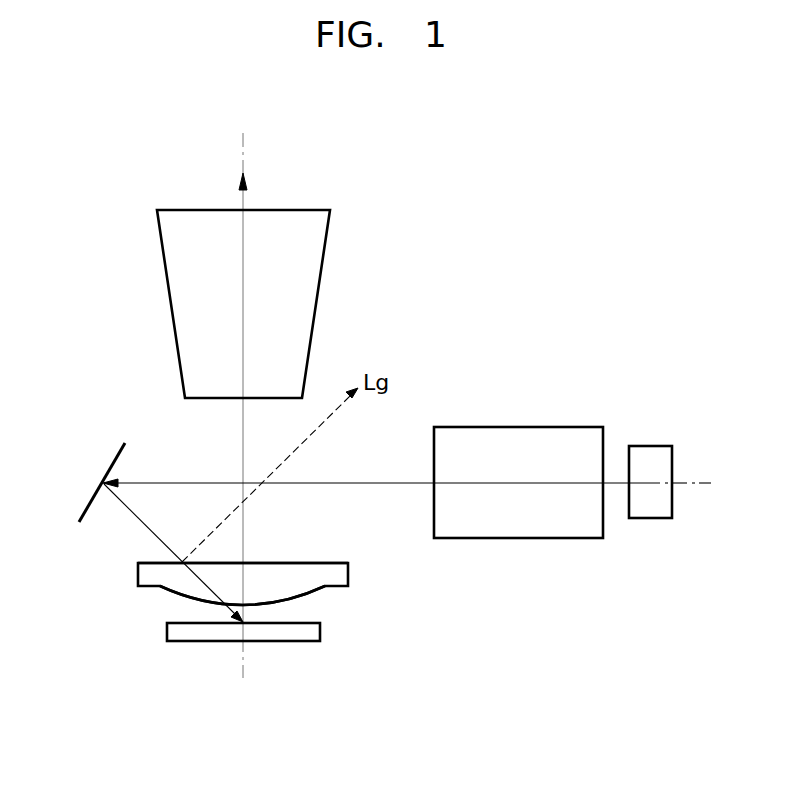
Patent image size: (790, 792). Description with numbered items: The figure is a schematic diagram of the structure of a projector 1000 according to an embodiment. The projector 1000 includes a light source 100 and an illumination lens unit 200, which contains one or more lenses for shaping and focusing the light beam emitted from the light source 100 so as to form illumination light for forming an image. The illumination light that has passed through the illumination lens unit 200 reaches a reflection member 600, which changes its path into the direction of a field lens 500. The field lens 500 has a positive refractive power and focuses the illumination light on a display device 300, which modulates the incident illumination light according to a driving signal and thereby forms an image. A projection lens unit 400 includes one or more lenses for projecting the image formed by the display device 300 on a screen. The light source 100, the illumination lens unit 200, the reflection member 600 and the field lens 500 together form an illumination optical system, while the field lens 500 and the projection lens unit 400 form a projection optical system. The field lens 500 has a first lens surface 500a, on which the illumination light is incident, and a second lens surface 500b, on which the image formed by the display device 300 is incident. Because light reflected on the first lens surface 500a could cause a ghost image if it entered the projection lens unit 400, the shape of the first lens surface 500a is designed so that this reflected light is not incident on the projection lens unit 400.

The projector 1000 is at (653, 275).
The light source 100 is at (651, 448).
The illumination lens unit 200 is at (516, 430).
The display device 300 is at (176, 632).
The projection lens unit 400 is at (175, 300).
The field lens 500 is at (146, 574).
The first lens surface 500a is at (298, 562).
The second lens surface 500b is at (310, 593).
The reflection member 600 is at (96, 492).